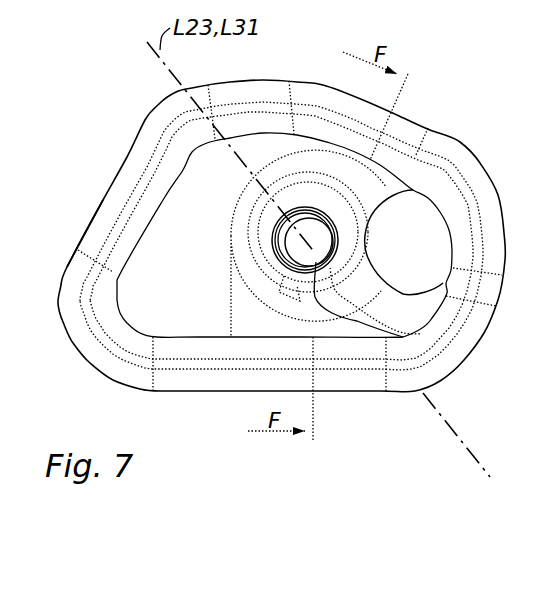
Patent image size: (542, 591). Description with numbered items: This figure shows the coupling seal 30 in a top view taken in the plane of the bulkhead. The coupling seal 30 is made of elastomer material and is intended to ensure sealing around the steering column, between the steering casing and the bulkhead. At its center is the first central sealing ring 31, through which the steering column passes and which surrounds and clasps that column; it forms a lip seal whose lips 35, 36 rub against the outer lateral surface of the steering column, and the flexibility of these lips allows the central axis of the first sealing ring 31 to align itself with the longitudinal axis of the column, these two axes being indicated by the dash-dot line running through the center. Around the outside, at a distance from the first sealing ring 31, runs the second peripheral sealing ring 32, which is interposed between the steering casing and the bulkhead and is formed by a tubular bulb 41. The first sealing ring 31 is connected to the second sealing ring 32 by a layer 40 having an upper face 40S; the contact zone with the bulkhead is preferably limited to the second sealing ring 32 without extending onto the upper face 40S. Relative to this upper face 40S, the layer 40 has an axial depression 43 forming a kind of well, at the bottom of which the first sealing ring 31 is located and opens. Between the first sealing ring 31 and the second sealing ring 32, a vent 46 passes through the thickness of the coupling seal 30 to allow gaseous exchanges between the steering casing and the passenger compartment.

The coupling seal 30 is at (92, 137).
The layer 40 is at (200, 172).
The upper face of the layer 40S is at (192, 199).
The tubular bulb 41 is at (459, 167).
The second peripheral sealing ring 32 is at (95, 242).
The vent 46 is at (416, 190).
The axial depression 43 is at (315, 185).
The lip 35 is at (276, 236).
The lip 36 is at (280, 257).
The first central sealing ring 31 is at (283, 265).